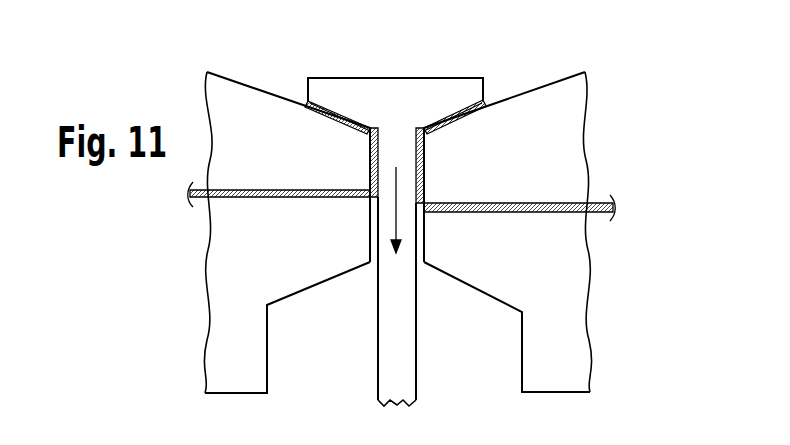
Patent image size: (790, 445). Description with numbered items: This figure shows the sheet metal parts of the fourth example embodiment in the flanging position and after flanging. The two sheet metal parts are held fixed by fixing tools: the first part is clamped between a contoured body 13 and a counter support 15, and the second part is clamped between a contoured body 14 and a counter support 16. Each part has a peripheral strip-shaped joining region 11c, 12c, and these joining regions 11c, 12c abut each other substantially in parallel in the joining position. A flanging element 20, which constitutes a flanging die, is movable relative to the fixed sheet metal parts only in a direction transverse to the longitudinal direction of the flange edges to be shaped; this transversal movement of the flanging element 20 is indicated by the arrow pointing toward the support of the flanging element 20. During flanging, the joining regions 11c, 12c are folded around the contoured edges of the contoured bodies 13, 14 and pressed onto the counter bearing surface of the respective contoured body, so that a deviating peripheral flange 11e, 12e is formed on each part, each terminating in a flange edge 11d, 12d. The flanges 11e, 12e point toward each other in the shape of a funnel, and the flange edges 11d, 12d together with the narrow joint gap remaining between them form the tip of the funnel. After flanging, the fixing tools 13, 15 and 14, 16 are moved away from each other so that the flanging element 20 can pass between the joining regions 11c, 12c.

The peripheral strip-shaped joining region 11c is at (368, 170).
The flange edge 11d is at (378, 128).
The peripheral flange 11e is at (318, 103).
The peripheral strip-shaped joining region 12c is at (426, 175).
The flange edge 12d is at (414, 128).
The peripheral flange 12e is at (468, 110).
The contoured body 13 is at (225, 101).
The contoured body 14 is at (575, 101).
The counter support 15 is at (217, 341).
The counter support 16 is at (568, 336).
The flanging element 20 is at (387, 378).